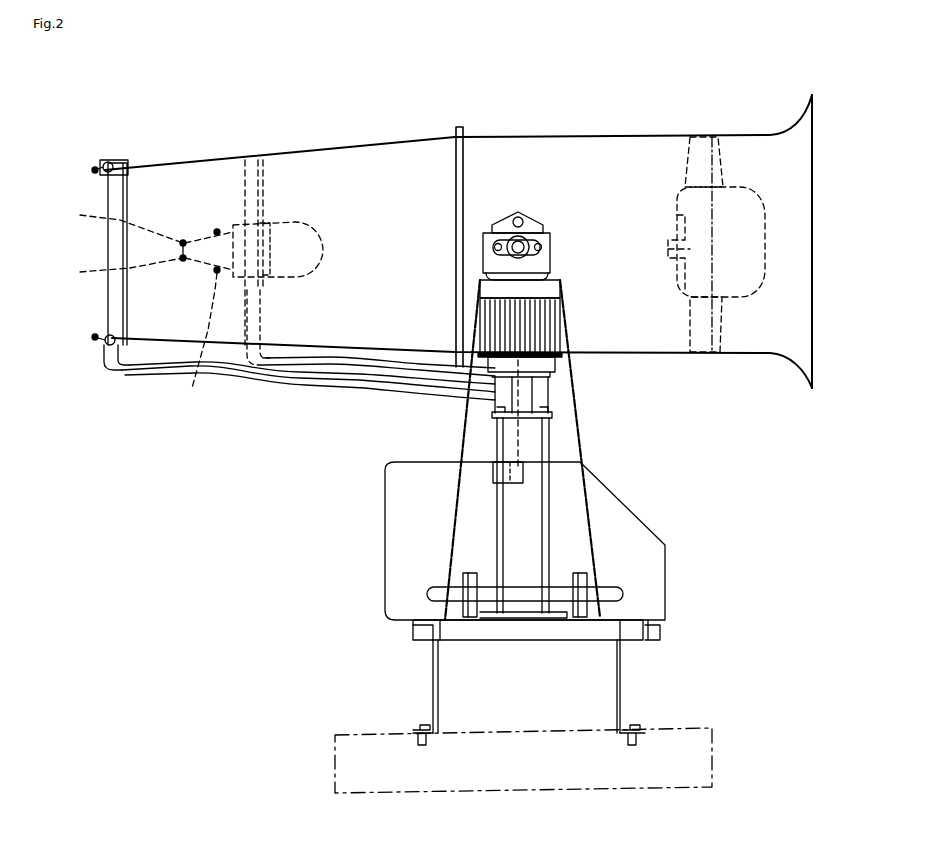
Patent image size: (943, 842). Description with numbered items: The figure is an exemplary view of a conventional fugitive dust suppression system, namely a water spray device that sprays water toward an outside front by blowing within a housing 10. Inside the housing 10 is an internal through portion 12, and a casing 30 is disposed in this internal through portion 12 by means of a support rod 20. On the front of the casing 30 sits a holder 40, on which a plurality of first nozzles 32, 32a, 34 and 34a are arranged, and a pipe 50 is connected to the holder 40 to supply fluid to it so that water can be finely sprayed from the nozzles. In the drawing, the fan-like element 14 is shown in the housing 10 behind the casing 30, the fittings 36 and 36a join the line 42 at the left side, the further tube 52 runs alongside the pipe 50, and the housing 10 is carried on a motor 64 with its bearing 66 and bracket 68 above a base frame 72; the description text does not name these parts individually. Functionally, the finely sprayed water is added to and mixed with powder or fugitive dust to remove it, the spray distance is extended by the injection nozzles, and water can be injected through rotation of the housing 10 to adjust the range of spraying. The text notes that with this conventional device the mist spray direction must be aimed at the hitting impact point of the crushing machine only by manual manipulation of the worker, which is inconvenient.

The housing 10 is at (478, 135).
The internal through portion 12 is at (378, 205).
The fan / propeller 14 is at (690, 140).
The support rod 20 is at (266, 185).
The casing 30 is at (244, 225).
The first nozzle 32 is at (121, 223).
The first nozzle 32a is at (117, 268).
The first nozzle 34 is at (217, 230).
The first nozzle 34a is at (199, 337).
The connector 36 is at (93, 168).
The connector 36a is at (90, 350).
The holder 40 is at (182, 240).
The pipe 42 is at (107, 240).
The pipe 50 is at (400, 374).
The tube 52 is at (295, 385).
The motor 64 is at (545, 262).
The bearing 66 is at (530, 243).
The bracket 68 is at (518, 212).
The base frame 72 is at (630, 630).